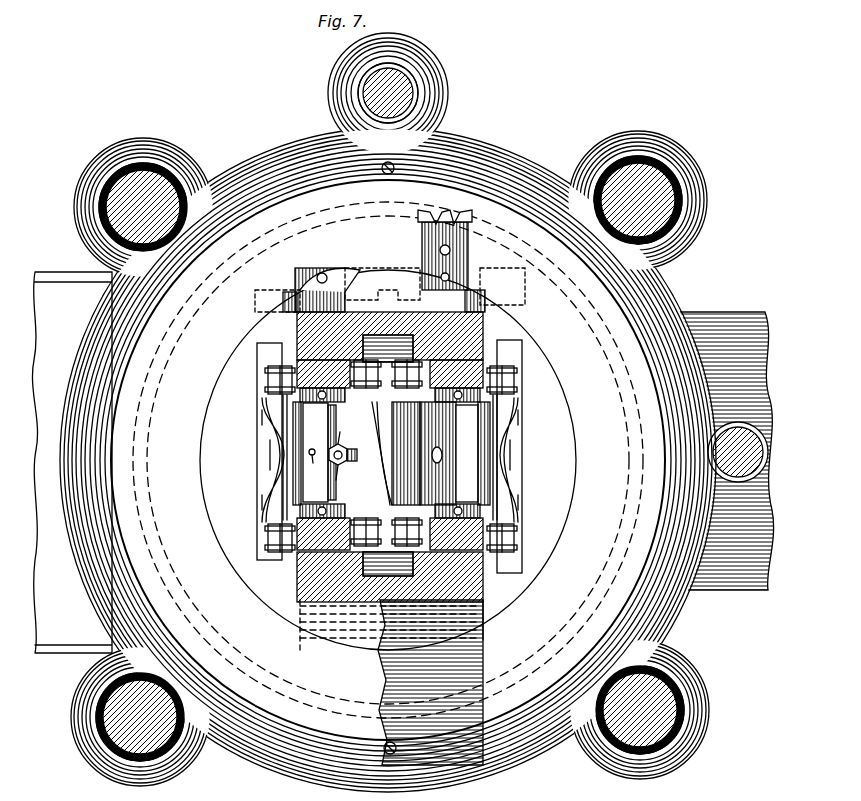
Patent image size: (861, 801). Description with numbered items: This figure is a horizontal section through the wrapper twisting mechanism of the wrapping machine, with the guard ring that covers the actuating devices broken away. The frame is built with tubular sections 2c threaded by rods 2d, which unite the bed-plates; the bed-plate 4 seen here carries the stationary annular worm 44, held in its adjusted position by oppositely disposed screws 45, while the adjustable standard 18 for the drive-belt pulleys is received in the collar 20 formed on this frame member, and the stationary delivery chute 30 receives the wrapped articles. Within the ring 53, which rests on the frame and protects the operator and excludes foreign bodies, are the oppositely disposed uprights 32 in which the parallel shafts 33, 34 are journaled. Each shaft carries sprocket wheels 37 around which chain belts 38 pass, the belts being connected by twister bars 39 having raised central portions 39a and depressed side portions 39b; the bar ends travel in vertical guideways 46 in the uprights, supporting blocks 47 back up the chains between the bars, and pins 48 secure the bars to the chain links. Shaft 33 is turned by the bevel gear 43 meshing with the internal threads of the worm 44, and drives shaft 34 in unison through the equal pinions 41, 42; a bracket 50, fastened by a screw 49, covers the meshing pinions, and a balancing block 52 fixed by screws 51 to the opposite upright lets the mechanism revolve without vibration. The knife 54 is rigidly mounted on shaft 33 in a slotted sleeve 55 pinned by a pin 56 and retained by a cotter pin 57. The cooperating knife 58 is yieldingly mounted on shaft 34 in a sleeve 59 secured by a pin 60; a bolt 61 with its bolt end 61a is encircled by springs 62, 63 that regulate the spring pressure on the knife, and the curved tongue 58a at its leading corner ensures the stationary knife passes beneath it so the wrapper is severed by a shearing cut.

The tubular section 2c is at (172, 178).
The threaded rod 2d is at (115, 212).
The bed-plate 4 is at (262, 158).
The adjustable standard 18 is at (368, 97).
The collar 20 is at (436, 90).
The delivery chute 30 is at (62, 652).
The upright 32 is at (297, 326).
The shaft 33 is at (484, 612).
The shaft 34 is at (335, 612).
The sprocket wheel 37 is at (386, 453).
The chain belt 38 is at (268, 381).
The twister bar 39 is at (262, 517).
The raised central portion 39a is at (266, 455).
The depressed portion 39b is at (264, 422).
The pinion 41 is at (495, 298).
The pinion 42 is at (292, 292).
The bevel gear 43 is at (470, 222).
The stationary annular worm 44 is at (340, 206).
The screw 45 is at (382, 172).
The guideway 46 is at (405, 338).
The supporting block 47 is at (262, 357).
The pin 48 is at (282, 402).
The screw 49 is at (382, 273).
The bracket 50 is at (316, 279).
The screw 51 is at (382, 642).
The block 52 is at (358, 640).
The ring 53 is at (135, 308).
The knife 54 is at (406, 453).
The sleeve 55 is at (471, 453).
The pin 56 is at (448, 453).
The cotter pin 57 is at (442, 460).
The knife 58 is at (374, 453).
The tongue 58a is at (390, 502).
The sleeve 59 is at (314, 453).
The pin 60 is at (312, 469).
The bolt 61 is at (345, 482).
The pin 61a is at (352, 427).
The spring 62 is at (350, 448).
The spring 63 is at (740, 440).